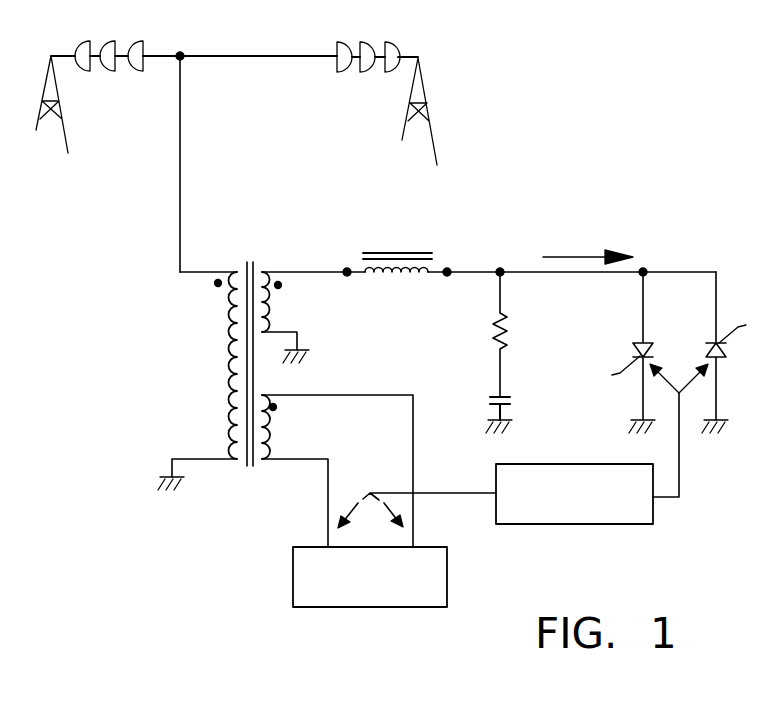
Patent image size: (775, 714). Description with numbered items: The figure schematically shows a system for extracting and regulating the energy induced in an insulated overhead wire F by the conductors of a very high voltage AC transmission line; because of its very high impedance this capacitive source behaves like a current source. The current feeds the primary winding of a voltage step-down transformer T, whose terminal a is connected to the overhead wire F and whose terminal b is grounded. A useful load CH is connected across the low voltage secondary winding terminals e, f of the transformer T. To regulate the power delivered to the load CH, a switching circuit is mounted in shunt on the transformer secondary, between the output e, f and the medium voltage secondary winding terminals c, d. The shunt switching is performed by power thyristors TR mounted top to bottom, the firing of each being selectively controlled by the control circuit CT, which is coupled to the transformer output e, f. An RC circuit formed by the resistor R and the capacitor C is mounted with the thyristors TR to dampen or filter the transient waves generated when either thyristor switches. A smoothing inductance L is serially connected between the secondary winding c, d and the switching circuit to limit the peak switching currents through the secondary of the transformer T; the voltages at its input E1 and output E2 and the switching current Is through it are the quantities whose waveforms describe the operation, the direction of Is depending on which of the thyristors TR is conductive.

The overhead wire F is at (243, 33).
The voltage step-down transformer T is at (256, 240).
The primary winding terminal a is at (204, 255).
The primary winding terminal b is at (195, 459).
The medium voltage secondary winding terminal c is at (305, 255).
The medium voltage secondary winding terminal d is at (297, 318).
The low voltage secondary winding terminal e is at (300, 381).
The low voltage secondary winding terminal f is at (303, 446).
The smoothing inductance L is at (397, 278).
The voltage point E1 is at (345, 279).
The voltage point E2 is at (452, 279).
The switching current Is is at (588, 249).
The resistor of RC circuit R is at (509, 334).
The capacitor of RC circuit C is at (506, 412).
The power thyristors TR is at (697, 359).
The control circuit CT is at (626, 507).
The useful load CH is at (424, 585).